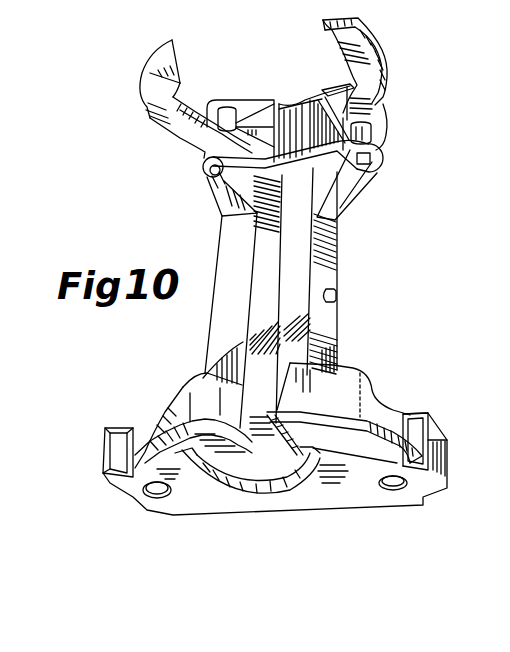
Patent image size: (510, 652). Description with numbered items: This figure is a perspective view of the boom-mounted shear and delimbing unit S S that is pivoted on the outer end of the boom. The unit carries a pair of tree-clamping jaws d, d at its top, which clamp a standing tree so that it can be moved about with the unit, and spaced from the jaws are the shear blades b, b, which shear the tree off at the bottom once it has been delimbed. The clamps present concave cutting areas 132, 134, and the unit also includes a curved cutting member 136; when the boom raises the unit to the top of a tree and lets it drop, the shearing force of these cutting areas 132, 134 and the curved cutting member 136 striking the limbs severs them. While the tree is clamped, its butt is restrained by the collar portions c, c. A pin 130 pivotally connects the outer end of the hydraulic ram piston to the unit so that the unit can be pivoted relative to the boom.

The pin 130 is at (338, 293).
The concave cutting area 132 is at (168, 124).
The concave cutting area 134 is at (402, 90).
The curved cutting member 136 is at (271, 298).
The tree-clamping jaws d is at (176, 47).
The collar portions c is at (183, 387).
The shear blades b is at (285, 455).
The viewing direction arrow SS is at (141, 181).